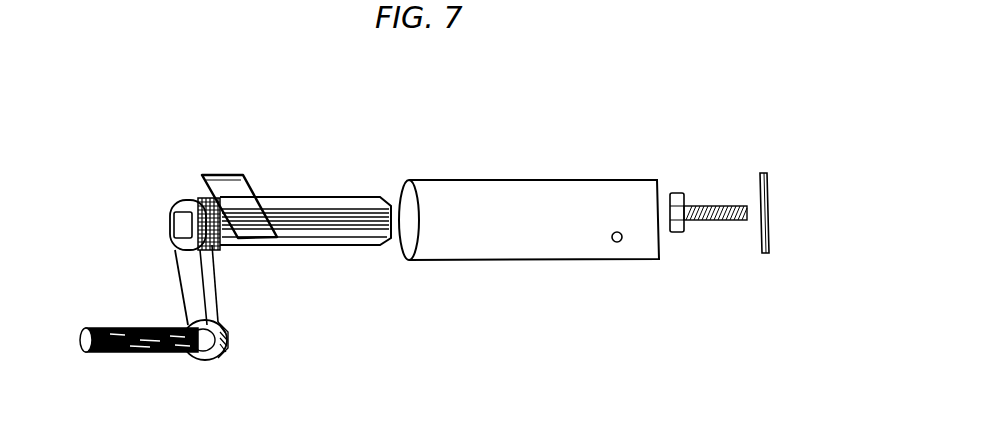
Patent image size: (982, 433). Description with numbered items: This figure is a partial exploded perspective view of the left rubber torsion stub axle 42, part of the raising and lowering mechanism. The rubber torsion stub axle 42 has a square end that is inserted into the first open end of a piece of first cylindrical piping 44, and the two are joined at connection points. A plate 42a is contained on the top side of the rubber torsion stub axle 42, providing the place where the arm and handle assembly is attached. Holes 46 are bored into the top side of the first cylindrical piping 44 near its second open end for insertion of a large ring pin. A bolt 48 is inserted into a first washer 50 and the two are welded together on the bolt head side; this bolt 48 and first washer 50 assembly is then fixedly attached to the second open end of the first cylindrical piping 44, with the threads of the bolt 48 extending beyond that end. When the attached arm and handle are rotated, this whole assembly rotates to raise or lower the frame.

The rubber torsion stub axle 42 is at (190, 278).
The plate 42a is at (235, 193).
The first cylindrical piping 44 is at (535, 210).
The holes 46 is at (615, 245).
The bolt 48 is at (713, 220).
The first washer 50 is at (777, 210).